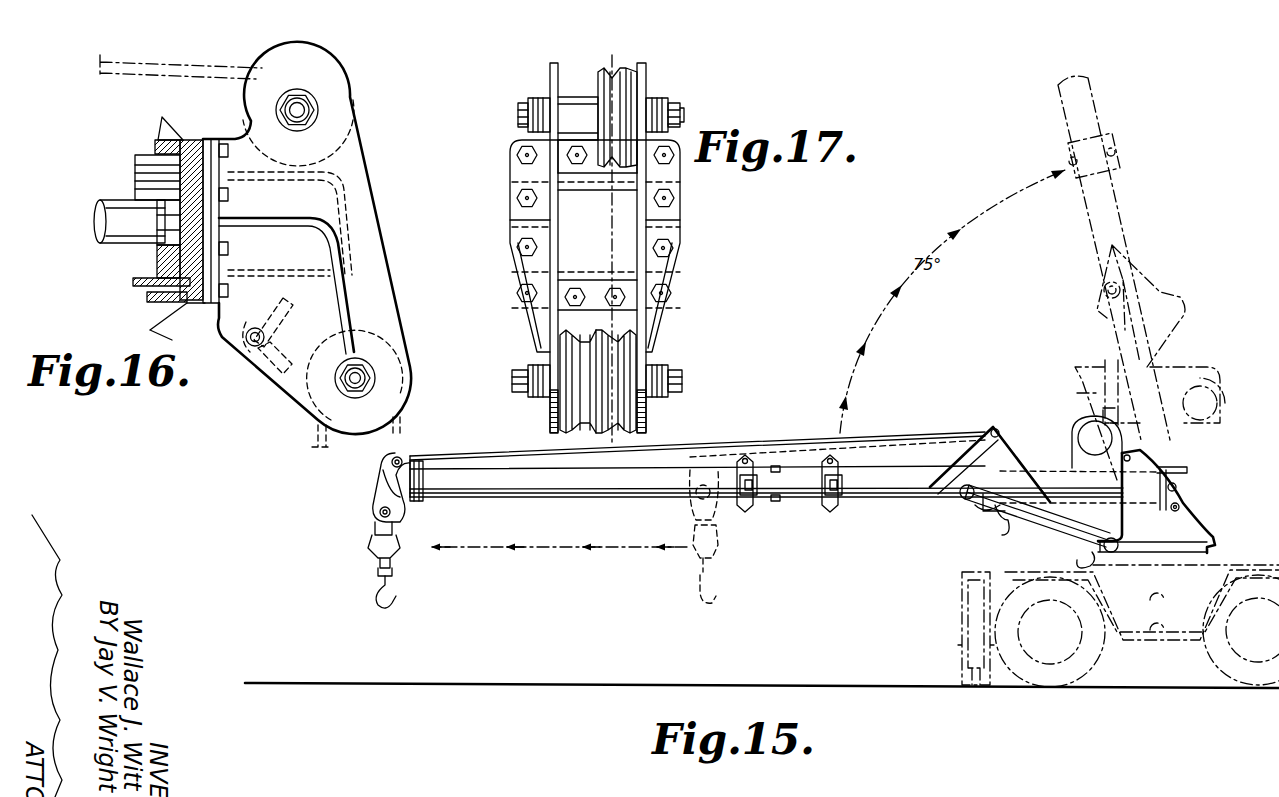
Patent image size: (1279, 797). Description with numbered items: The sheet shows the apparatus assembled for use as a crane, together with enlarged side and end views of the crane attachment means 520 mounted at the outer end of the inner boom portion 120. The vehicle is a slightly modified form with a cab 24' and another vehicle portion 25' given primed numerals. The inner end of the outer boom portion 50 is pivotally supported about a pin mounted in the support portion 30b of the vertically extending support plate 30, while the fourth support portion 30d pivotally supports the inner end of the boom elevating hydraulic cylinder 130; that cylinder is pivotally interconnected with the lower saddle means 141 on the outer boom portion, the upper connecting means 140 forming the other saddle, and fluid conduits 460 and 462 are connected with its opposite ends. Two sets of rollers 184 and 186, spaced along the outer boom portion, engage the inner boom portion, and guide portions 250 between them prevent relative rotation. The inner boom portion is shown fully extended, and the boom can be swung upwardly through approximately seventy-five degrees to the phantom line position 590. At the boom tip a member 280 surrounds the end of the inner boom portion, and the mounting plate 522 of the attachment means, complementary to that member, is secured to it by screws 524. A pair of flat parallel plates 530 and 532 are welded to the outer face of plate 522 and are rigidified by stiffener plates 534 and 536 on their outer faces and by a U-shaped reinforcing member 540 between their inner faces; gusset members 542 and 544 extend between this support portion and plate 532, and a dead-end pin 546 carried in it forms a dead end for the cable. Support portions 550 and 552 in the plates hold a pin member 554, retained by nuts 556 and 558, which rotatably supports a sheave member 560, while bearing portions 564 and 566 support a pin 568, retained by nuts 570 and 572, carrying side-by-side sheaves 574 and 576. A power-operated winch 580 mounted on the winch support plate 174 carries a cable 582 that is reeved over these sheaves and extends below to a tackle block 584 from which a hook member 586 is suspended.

In FIG. 15, the cab 24' is at (1156, 401).
In FIG. 15, the outrigger 25' is at (1076, 626).
In FIG. 15, the support plate 30 is at (1193, 528).
In FIG. 15, the support portion 30b is at (1180, 493).
In FIG. 15, the support portion 30d is at (1119, 545).
In FIG. 16, the outer boom portion 50 is at (158, 300).
In FIG. 15, the outer boom portion 50 is at (886, 503).
In FIG. 16, the inner boom portion 120 is at (134, 268).
In FIG. 15, the inner boom portion 120 is at (572, 498).
In FIG. 15, the hydraulic cylinder 130 is at (1030, 516).
In FIG. 15, the upper connecting means 140 is at (957, 457).
In FIG. 15, the lower connecting means 141 is at (975, 508).
In FIG. 15, the winch support plate 174 is at (1080, 462).
In FIG. 15, the rollers 184 is at (842, 510).
In FIG. 15, the rollers 186 is at (748, 513).
In FIG. 15, the guide portions 250 is at (782, 512).
In FIG. 16, the member 280 is at (194, 306).
In FIG. 15, the fluid conduit 460 is at (1077, 560).
In FIG. 15, the fluid conduit 462 is at (1003, 525).
In FIG. 16, the crane attachment means 520 is at (284, 405).
In FIG. 17, the crane attachment means 520 is at (693, 247).
In FIG. 15, the crane attachment means 520 is at (372, 492).
In FIG. 16, the mounting plate 522 is at (208, 139).
In FIG. 16, the screws 524 is at (232, 153).
In FIG. 17, the screws 524 is at (518, 162).
In FIG. 16, the plate 530 is at (383, 254).
In FIG. 17, the plate 530 is at (550, 77).
In FIG. 17, the plate 532 is at (646, 78).
In FIG. 15, the plate 532 is at (384, 471).
In FIG. 16, the stiffener plate 534 is at (341, 301).
In FIG. 17, the stiffener plate 534 is at (513, 228).
In FIG. 17, the stiffener plate 536 is at (686, 228).
In FIG. 15, the stiffener plate 536 is at (409, 500).
In FIG. 16, the reinforcing member 540 is at (356, 205).
In FIG. 17, the reinforcing member 540 is at (603, 251).
In FIG. 16, the gusset member 542 is at (291, 305).
In FIG. 16, the gusset member 544 is at (261, 364).
In FIG. 16, the dead-end pin 546 is at (265, 338).
In FIG. 17, the support portion 550 is at (572, 97).
In FIG. 17, the support portion 552 is at (664, 100).
In FIG. 16, the pin member 554 is at (296, 123).
In FIG. 17, the pin member 554 is at (681, 113).
In FIG. 16, the nut 556 is at (318, 111).
In FIG. 17, the nut 556 is at (518, 104).
In FIG. 17, the nut 558 is at (684, 121).
In FIG. 16, the sheave member 560 is at (350, 147).
In FIG. 17, the sheave member 560 is at (600, 175).
In FIG. 17, the bearing portion 564 is at (538, 398).
In FIG. 17, the bearing portion 566 is at (652, 398).
In FIG. 16, the pin 568 is at (350, 392).
In FIG. 17, the pin 568 is at (682, 381).
In FIG. 16, the nut 570 is at (377, 376).
In FIG. 17, the nut 570 is at (528, 371).
In FIG. 17, the nut 572 is at (666, 370).
In FIG. 16, the sheave 574 is at (393, 329).
In FIG. 17, the sheave 574 is at (553, 433).
In FIG. 17, the sheave 576 is at (642, 433).
In FIG. 15, the winch 580 is at (1072, 434).
In FIG. 16, the cable 582 is at (102, 76).
In FIG. 15, the cable 582 is at (752, 437).
In FIG. 15, the tackle block 584 is at (398, 548).
In FIG. 15, the hook member 586 is at (392, 598).
In FIG. 15, the phantom line position 590 is at (1112, 205).